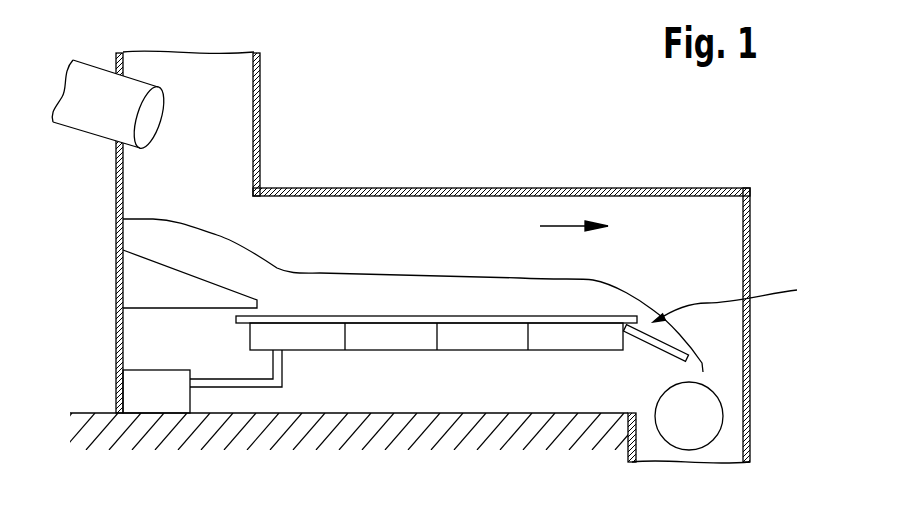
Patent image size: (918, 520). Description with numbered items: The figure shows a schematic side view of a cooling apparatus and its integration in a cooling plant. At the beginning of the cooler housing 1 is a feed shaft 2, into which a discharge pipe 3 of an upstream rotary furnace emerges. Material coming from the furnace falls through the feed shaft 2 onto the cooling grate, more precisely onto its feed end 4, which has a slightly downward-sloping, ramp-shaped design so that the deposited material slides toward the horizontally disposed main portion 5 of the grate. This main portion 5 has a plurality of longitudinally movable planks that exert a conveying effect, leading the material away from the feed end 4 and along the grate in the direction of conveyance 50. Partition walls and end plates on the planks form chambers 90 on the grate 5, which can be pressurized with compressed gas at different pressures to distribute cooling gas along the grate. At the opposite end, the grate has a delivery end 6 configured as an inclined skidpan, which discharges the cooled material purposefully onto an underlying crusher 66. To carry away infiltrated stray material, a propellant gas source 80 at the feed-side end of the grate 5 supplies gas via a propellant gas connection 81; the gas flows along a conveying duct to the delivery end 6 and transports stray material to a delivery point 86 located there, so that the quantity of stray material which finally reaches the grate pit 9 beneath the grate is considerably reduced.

The cooler housing 1 is at (401, 190).
The feed shaft 2 is at (236, 104).
The discharge pipe 3 is at (83, 120).
The feed end 4 is at (167, 286).
The main portion of the cooling grate 5 is at (459, 316).
The direction of conveyance 50 is at (562, 226).
The delivery end 6 is at (657, 338).
The grate pit 9 is at (455, 350).
The chambers 90 is at (308, 337).
The propellant gas source 80 is at (140, 392).
The propellant gas connection 81 is at (283, 350).
The delivery point 86 is at (740, 299).
The crusher 66 is at (707, 403).